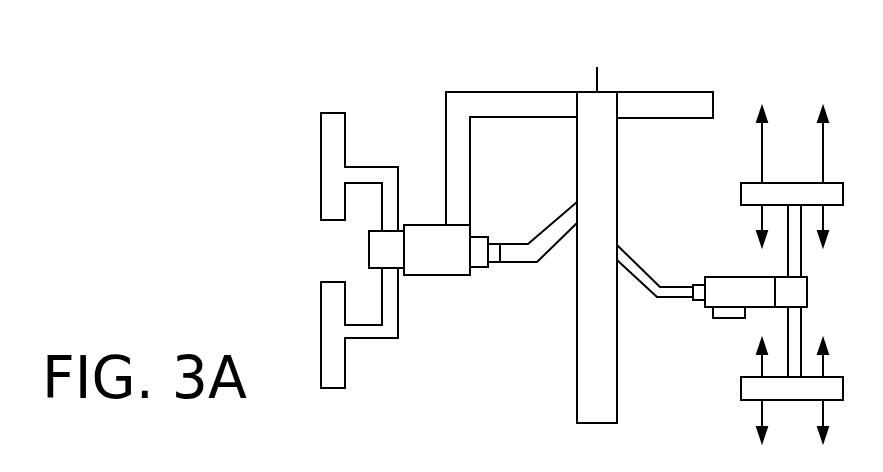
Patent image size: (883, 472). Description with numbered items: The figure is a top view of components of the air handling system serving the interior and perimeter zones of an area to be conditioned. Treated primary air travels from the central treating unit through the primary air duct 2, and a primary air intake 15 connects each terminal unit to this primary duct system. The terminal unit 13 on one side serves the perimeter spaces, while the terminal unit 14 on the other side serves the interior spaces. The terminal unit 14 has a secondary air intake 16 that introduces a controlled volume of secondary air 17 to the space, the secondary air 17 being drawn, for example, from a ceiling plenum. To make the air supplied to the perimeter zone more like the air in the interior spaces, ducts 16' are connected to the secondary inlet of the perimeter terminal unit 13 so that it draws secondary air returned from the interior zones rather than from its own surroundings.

The primary air duct 2 is at (608, 92).
The terminal unit 13 is at (437, 275).
The terminal unit 14 is at (773, 277).
The primary air intake 15 is at (478, 237).
The secondary air intake 16 is at (697, 336).
The duct 16' is at (511, 135).
The secondary air 17 is at (715, 104).